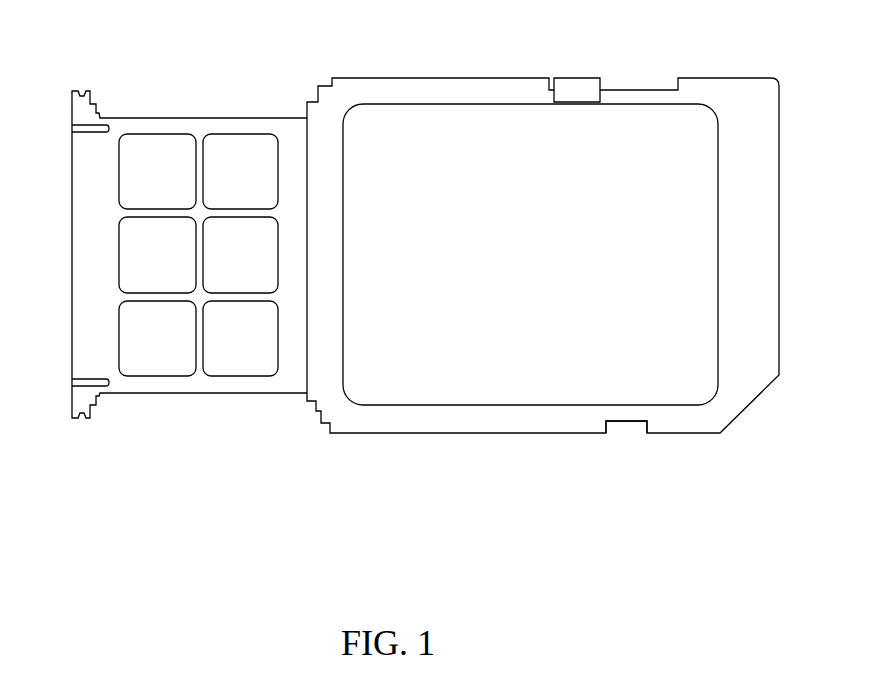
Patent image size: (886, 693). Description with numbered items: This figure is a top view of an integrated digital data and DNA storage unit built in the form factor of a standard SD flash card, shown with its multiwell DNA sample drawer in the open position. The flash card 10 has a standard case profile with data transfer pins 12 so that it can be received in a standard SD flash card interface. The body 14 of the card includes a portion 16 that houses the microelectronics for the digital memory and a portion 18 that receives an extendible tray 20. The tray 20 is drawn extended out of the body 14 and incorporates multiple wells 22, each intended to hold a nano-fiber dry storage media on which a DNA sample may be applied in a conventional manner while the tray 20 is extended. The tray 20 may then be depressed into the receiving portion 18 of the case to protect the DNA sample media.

The flash card 10 is at (365, 486).
The data transfer pins 12 is at (779, 304).
The body 14 is at (403, 118).
The portion for the microelectronics 16 is at (655, 387).
The portion receiving an extendible tray 18 is at (527, 343).
The extendible tray 20 is at (182, 118).
The wells 22 is at (153, 245).